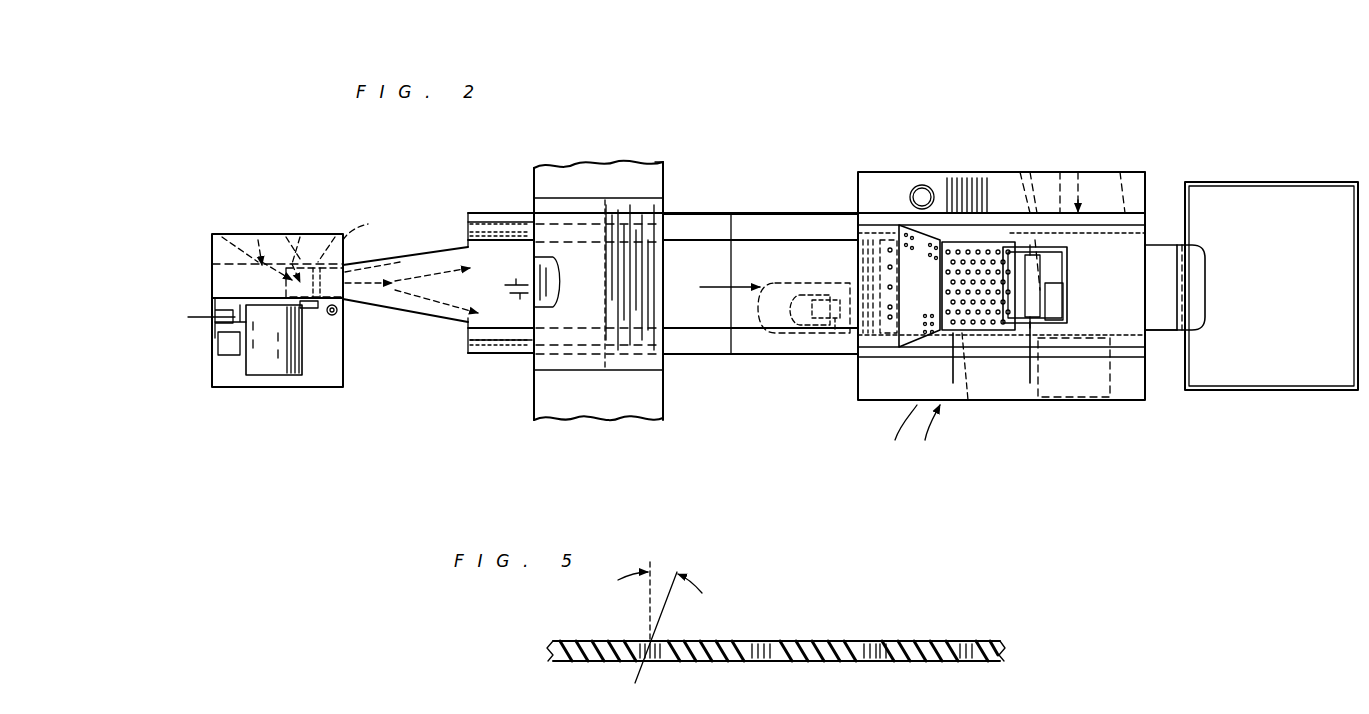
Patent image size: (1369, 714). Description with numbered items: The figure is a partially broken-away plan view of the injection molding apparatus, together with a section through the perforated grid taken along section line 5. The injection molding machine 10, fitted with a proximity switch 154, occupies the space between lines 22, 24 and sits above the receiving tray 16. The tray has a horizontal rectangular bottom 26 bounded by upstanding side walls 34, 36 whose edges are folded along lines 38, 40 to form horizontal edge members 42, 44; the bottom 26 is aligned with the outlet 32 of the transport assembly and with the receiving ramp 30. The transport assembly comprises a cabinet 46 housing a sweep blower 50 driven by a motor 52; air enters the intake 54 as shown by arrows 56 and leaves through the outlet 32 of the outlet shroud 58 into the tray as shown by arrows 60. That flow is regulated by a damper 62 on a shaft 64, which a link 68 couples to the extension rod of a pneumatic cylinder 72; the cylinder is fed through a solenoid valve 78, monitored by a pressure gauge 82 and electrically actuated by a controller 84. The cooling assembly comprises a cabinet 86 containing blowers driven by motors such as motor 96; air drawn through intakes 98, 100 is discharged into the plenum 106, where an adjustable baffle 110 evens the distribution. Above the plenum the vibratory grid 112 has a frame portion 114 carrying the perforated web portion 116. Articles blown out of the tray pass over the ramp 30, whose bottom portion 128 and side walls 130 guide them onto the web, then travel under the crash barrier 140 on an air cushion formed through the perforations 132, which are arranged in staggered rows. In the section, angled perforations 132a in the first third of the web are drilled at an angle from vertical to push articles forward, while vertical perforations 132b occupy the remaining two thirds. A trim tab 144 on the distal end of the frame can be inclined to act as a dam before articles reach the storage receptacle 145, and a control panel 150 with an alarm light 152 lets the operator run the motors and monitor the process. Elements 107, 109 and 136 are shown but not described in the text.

In FIG. 2, the injection molding machine 10 is at (664, 170).
In FIG. 2, the receiving tray 16 is at (494, 208).
In FIG. 2, the line 22 is at (620, 198).
In FIG. 2, the line 24 is at (640, 372).
In FIG. 2, the bottom 26 is at (716, 240).
In FIG. 2, the receiving ramp 30 is at (778, 210).
In FIG. 2, the outlet 32 is at (478, 340).
In FIG. 2, the side wall 34 is at (704, 344).
In FIG. 2, the side wall 36 is at (686, 212).
In FIG. 2, the fold line 38 is at (510, 355).
In FIG. 2, the fold line 40 is at (522, 219).
In FIG. 2, the edge member 42 is at (488, 355).
In FIG. 2, the edge member 44 is at (468, 213).
In FIG. 2, the cabinet 46 is at (342, 370).
In FIG. 2, the sweep blower 50 is at (298, 262).
In FIG. 2, the motor 52 is at (285, 375).
In FIG. 2, the intake 54 is at (258, 236).
In FIG. 2, the arrows 56 is at (283, 236).
In FIG. 2, the outlet shroud 58 is at (418, 298).
In FIG. 2, the arrows 60 is at (515, 288).
In FIG. 2, the damper 62 is at (368, 260).
In FIG. 2, the shaft 64 is at (356, 226).
In FIG. 2, the link 68 is at (336, 316).
In FIG. 2, the pneumatic cylinder 72 is at (343, 315).
In FIG. 2, the solenoid valve 78 is at (244, 322).
In FIG. 2, the pressure gauge 82 is at (228, 300).
In FIG. 2, the controller 84 is at (215, 322).
In FIG. 2, the cabinet 86 is at (1058, 165).
In FIG. 2, the motor 96 is at (1090, 394).
In FIG. 2, the intake 98 is at (965, 400).
In FIG. 2, the intake 100 is at (1108, 178).
In FIG. 2, the plenum 106 is at (1067, 257).
In FIG. 2, the outlet 107 is at (1185, 280).
In FIG. 2, the valve member 109 is at (1062, 305).
In FIG. 2, the baffle 110 is at (1040, 272).
In FIG. 2, the vibratory grid 112 is at (1160, 340).
In FIG. 2, the frame portion 114 is at (1158, 244).
In FIG. 2, the perforated web portion 116 is at (990, 250).
In FIG. 5, the perforated web portion 116 is at (722, 641).
In FIG. 2, the bottom portion 128 is at (812, 250).
In FIG. 2, the side walls 130 is at (798, 345).
In FIG. 2, the perforations 132 is at (896, 250).
In FIG. 2, the partition walls 136 is at (1018, 212).
In FIG. 2, the crash barrier 140 is at (905, 340).
In FIG. 2, the trim tab 144 is at (1198, 296).
In FIG. 2, the storage receptacle 145 is at (1250, 346).
In FIG. 2, the control panel 150 is at (960, 185).
In FIG. 2, the alarm light 152 is at (920, 190).
In FIG. 2, the proximity switch 154 is at (560, 277).
In FIG. 2, the section line 5 is at (982, 357).
In FIG. 5, the angled perforations 132a is at (640, 641).
In FIG. 5, the vertical perforations 132b is at (876, 642).